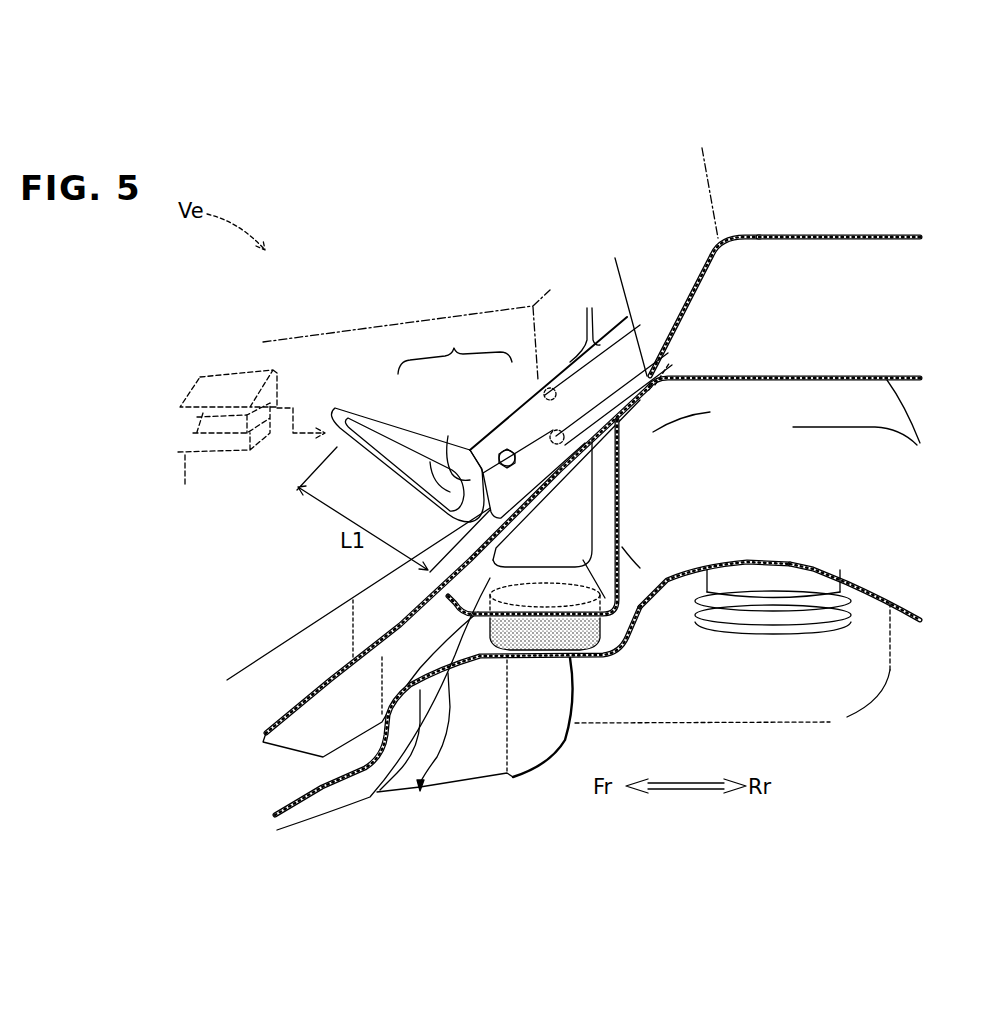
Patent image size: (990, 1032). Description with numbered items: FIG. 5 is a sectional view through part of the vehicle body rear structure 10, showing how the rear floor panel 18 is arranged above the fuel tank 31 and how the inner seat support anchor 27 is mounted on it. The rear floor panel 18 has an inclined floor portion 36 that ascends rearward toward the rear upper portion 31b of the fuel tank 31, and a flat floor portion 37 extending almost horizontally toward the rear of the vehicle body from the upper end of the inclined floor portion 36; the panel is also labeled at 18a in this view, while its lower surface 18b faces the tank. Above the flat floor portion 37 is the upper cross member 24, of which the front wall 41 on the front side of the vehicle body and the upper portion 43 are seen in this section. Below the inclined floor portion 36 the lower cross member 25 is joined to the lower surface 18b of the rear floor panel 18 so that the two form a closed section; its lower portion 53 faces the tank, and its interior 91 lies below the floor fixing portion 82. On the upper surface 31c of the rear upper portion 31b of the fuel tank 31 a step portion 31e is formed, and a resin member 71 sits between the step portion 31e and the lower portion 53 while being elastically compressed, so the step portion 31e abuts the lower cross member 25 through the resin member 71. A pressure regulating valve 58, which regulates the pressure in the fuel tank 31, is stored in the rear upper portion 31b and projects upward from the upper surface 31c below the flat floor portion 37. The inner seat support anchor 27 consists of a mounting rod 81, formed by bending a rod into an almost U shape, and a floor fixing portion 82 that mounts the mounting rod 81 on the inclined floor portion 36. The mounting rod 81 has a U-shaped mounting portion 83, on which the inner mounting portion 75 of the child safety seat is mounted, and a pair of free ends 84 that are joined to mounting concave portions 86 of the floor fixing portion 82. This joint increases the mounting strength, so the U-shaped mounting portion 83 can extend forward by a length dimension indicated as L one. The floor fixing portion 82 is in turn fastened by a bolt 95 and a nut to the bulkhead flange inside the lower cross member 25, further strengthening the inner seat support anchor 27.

The vehicle body rear structure 10 is at (268, 322).
The rear floor panel 18 is at (351, 647).
The hood outer panel 18a is at (308, 650).
The lower surface 18b is at (290, 722).
The upper cross member 24 is at (807, 204).
The lower cross member 25 is at (637, 468).
The inner seat support anchor 27 is at (455, 349).
The fuel tank 31 is at (893, 521).
The rear upper portion 31b is at (780, 525).
The upper surface 31c is at (704, 528).
The step portion 31e is at (523, 652).
The inclined floor portion 36 is at (427, 540).
The flat floor portion 37 is at (790, 347).
The front wall 41 is at (652, 243).
The upper portion 43 is at (850, 215).
The lower portion 53 is at (530, 578).
The pressure regulating valve 58 is at (790, 602).
The resin member 71 is at (590, 652).
The inner mounting portion 75 is at (248, 440).
The mounting rod 81 is at (400, 440).
The floor fixing portion 82 is at (505, 425).
The U-shaped mounting portion 83 is at (382, 465).
The free ends 84 is at (536, 378).
The mounting concave portions 86 is at (458, 480).
The interior 91 is at (584, 509).
The bolt 95 is at (500, 450).